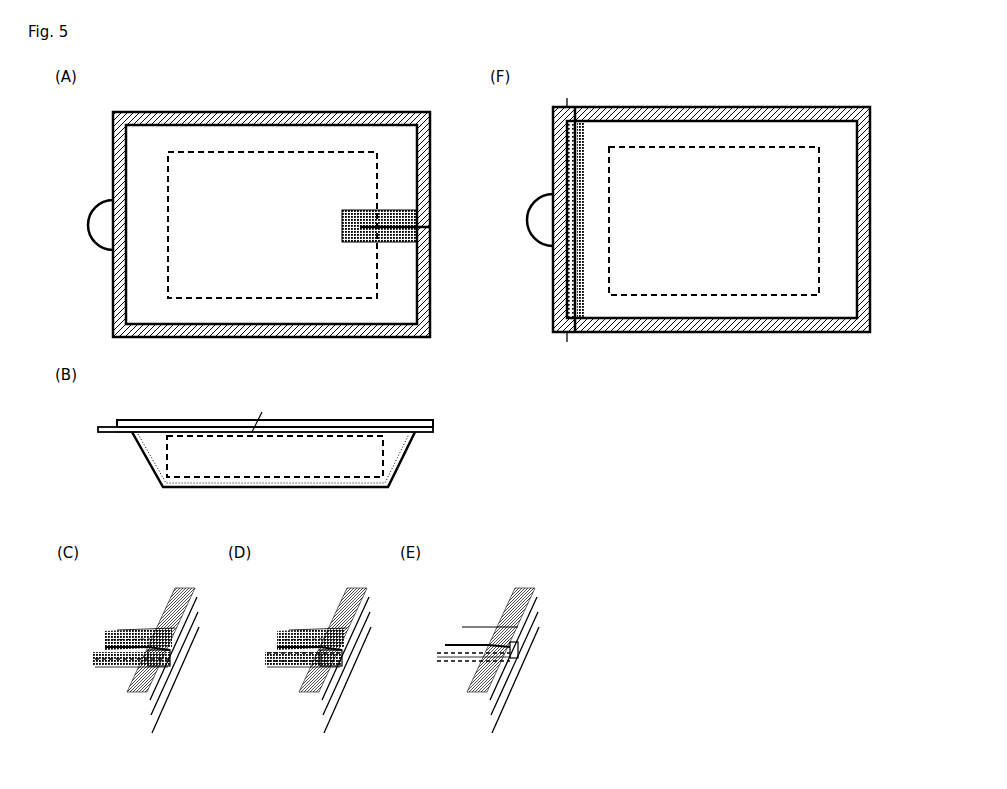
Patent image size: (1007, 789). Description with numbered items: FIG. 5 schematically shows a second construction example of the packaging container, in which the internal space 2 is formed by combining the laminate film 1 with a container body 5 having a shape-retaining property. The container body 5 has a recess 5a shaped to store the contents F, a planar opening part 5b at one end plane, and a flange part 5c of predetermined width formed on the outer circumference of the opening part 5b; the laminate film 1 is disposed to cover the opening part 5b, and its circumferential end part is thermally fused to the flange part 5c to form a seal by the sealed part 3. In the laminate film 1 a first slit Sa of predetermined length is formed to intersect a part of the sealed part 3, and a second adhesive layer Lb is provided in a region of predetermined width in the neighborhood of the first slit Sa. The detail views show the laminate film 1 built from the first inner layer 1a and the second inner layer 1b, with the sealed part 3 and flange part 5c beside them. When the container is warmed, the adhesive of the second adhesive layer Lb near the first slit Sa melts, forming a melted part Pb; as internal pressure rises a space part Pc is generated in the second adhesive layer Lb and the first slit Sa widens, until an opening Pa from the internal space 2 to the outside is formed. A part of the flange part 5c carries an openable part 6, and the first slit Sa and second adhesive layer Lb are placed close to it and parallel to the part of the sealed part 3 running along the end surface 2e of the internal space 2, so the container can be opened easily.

The laminate film 1 is at (412, 420).
The first inner layer 1a is at (143, 697).
The second inner layer 1b is at (147, 713).
The internal space 2 is at (392, 455).
The end surface of the internal space 2e is at (567, 221).
The sealed part 3 is at (210, 337).
The container body 5 is at (120, 466).
The recess 5a is at (152, 460).
The opening part 5b is at (262, 412).
The flange part 5c is at (128, 432).
The openable part 6 is at (100, 242).
The contents F is at (258, 300).
The second adhesive layer Lb is at (355, 210).
The first slit Sa is at (408, 228).
The opening Pa is at (513, 657).
The melted part Pb is at (123, 637).
The space part Pc is at (295, 637).